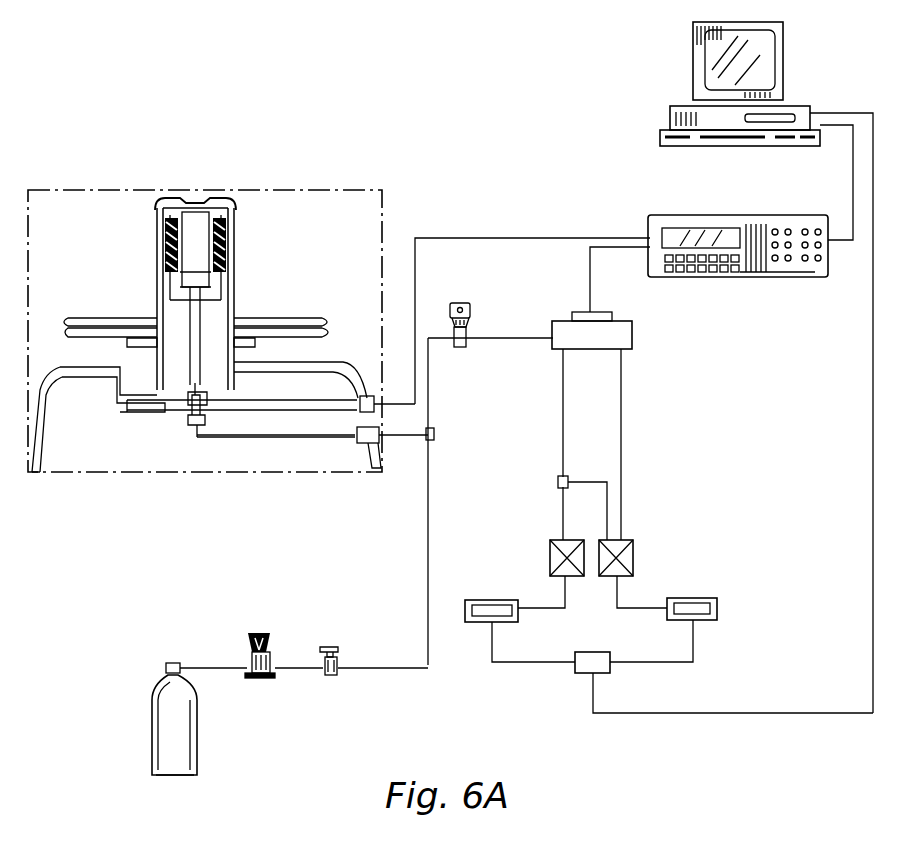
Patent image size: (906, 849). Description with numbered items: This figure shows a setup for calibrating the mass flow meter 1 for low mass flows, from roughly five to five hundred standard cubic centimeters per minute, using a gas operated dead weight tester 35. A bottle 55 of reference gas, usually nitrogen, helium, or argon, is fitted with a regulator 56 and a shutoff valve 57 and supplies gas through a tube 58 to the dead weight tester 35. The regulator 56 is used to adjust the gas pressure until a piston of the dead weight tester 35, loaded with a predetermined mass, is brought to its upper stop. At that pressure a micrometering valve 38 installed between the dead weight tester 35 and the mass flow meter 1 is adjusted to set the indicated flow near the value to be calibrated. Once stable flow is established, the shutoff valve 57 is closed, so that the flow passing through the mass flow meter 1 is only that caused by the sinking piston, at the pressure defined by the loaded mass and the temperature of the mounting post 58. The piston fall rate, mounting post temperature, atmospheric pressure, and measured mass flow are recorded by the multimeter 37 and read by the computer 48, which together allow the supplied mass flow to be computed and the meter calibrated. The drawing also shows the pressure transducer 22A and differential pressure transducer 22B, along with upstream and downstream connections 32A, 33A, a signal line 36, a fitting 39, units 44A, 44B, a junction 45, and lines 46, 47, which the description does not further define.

The mass flow meter 1 is at (562, 312).
The pressure transducer 22A is at (550, 556).
The differential pressure transducer 22B is at (633, 556).
The upstream line 32A is at (545, 370).
The downstream line 33A is at (628, 482).
The dead weight tester 35 is at (128, 487).
The signal line 36 is at (510, 238).
The multimeter 37 is at (738, 279).
The micrometering valve 38 is at (455, 302).
The bypass fitting 39 is at (557, 482).
The upstream flow controller 44A is at (490, 580).
The downstream flow controller 44B is at (705, 598).
The junction unit 45 is at (575, 668).
The signal line to computer 46 is at (863, 328).
The signal line to instrument 47 is at (853, 176).
The computer 48 is at (678, 96).
The bottle 55 is at (168, 663).
The regulator 56 is at (248, 640).
The shutoff valve 57 is at (338, 650).
The tube 58 is at (226, 293).